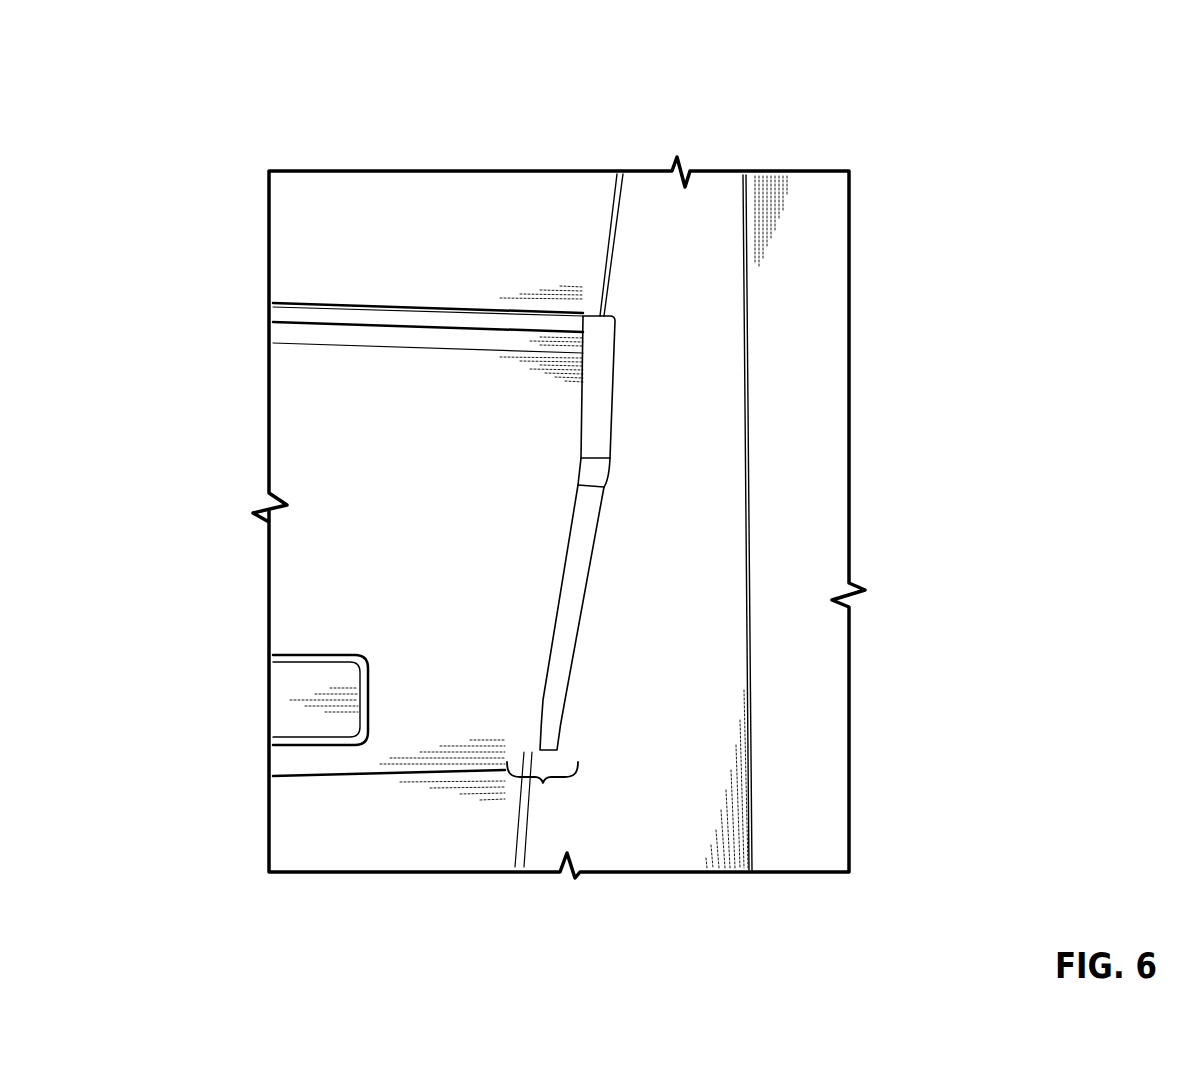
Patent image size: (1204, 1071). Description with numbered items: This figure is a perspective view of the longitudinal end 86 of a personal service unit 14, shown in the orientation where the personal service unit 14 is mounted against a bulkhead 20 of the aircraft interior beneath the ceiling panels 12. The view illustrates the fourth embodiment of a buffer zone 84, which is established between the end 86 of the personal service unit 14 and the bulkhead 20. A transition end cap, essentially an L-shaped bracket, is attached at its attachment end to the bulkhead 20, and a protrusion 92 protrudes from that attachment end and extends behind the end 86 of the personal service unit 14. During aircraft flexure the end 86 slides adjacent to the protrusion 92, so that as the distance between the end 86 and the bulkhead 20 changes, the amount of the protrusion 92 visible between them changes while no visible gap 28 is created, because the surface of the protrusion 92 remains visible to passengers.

The ceiling panel 12 is at (310, 222).
The personal service unit 14 is at (441, 554).
The bulkhead 20 is at (658, 195).
The gap 28 is at (605, 316).
The buffer zone 84 is at (537, 783).
The longitudinal end 86 is at (583, 383).
The protrusion 92 is at (597, 348).